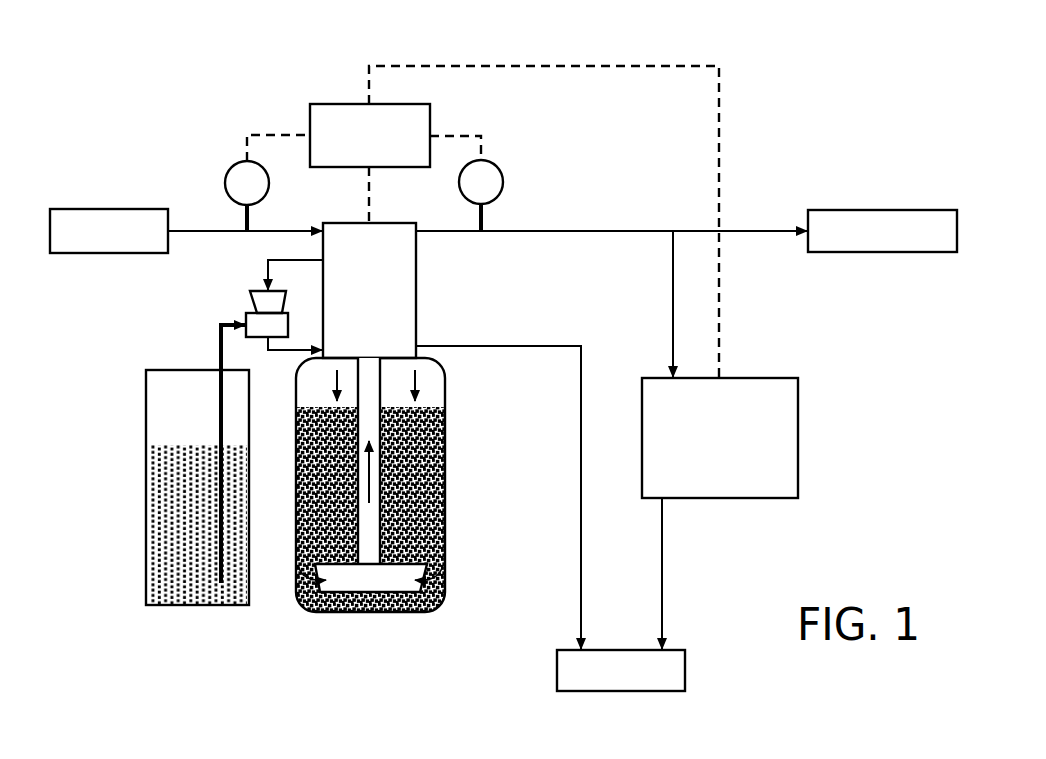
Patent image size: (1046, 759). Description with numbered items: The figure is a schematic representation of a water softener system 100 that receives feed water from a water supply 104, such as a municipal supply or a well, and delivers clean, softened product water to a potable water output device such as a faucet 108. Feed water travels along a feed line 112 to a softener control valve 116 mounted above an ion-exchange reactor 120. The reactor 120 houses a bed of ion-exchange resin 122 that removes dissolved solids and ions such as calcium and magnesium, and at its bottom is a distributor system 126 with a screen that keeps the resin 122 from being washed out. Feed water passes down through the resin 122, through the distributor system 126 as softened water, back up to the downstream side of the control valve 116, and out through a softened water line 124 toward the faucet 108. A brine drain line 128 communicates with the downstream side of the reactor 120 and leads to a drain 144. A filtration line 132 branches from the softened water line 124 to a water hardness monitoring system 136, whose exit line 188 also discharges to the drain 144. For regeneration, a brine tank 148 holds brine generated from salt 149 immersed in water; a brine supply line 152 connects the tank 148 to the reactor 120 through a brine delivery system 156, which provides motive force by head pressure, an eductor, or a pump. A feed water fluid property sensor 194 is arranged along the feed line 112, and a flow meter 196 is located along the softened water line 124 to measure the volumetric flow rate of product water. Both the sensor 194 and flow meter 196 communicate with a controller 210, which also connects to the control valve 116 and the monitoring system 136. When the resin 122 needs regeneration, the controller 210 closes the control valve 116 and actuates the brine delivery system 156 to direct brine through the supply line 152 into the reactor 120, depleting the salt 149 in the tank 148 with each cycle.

The water softener system 100 is at (798, 119).
The water supply 104 is at (80, 209).
The faucet 108 is at (905, 210).
The feed line 112 is at (204, 229).
The softener control valve 116 is at (369, 290).
The ion-exchange reactor 120 is at (394, 523).
The ion-exchange resin 122 is at (420, 467).
The softened water line 124 is at (548, 229).
The distributor system 126 is at (368, 572).
The brine drain line 128 is at (463, 345).
The filtration line 132 is at (673, 305).
The water hardness monitoring system 136 is at (720, 438).
The drain 144 is at (557, 677).
The brine tank 148 is at (146, 408).
The salt 149 is at (190, 570).
The brine supply line 152 is at (217, 350).
The brine delivery system 156 is at (250, 304).
The exit line 188 is at (662, 552).
The feed water fluid property sensor 194 is at (228, 172).
The flow meter 196 is at (500, 170).
The controller 210 is at (514, 222).